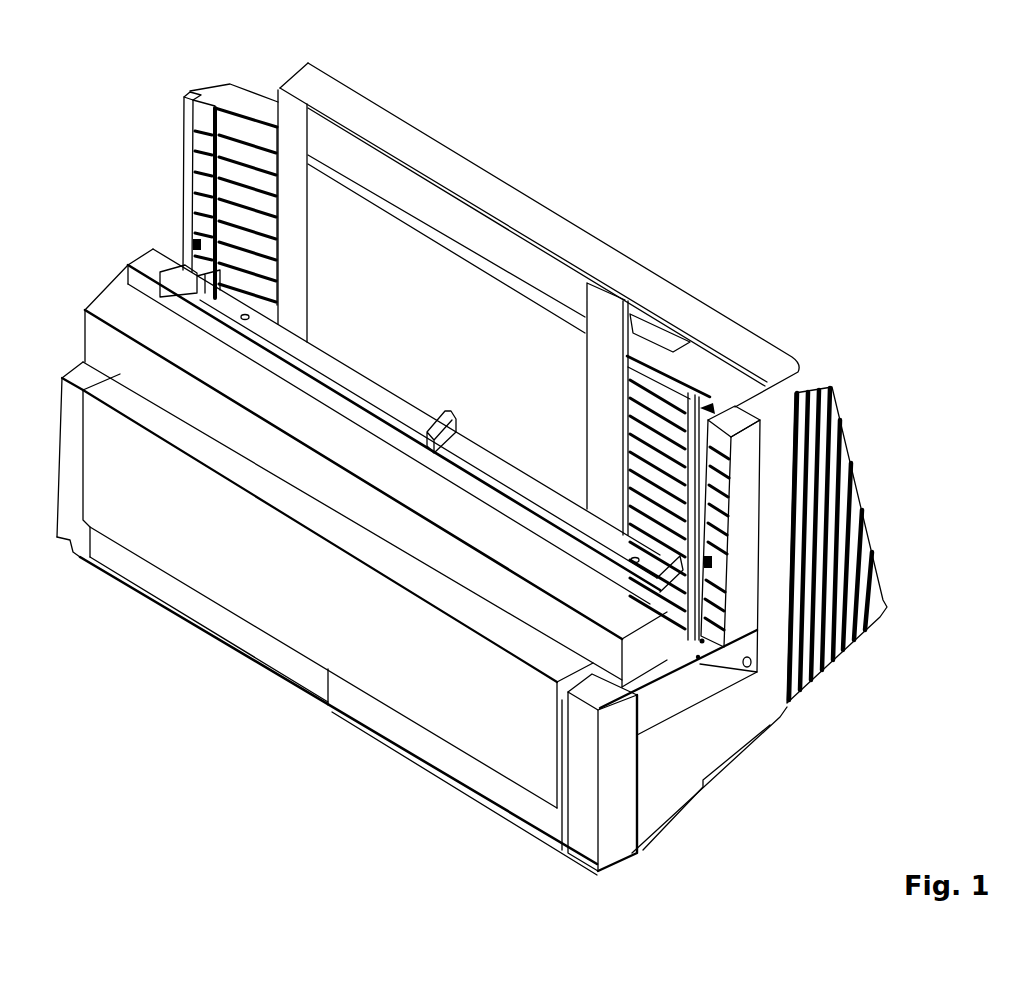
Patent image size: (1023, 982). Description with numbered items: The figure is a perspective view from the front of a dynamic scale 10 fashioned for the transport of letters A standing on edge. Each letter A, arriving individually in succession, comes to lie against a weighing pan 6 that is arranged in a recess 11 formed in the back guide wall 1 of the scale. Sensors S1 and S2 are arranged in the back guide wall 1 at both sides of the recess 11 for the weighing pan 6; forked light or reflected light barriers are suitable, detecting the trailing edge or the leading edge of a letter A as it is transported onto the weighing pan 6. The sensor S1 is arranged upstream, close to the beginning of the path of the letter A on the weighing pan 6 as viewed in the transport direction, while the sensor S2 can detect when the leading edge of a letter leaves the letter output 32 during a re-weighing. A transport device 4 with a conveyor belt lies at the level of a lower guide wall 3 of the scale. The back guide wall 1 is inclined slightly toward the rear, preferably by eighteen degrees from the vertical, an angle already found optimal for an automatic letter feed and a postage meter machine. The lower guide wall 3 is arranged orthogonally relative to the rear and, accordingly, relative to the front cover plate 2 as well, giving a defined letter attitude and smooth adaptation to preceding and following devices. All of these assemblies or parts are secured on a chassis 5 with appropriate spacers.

The back guide wall 1 is at (762, 548).
The front cover plate 2 is at (184, 94).
The lower guide wall 3 is at (698, 657).
The transport device 4 is at (710, 650).
The chassis 5 is at (832, 670).
The weighing pan 6 is at (712, 416).
The dynamic scale 10 is at (737, 222).
The recess 11 is at (733, 413).
The letter output 32 is at (702, 641).
The letter A is at (450, 193).
The sensor S1 is at (188, 240).
The sensor S2 is at (712, 562).